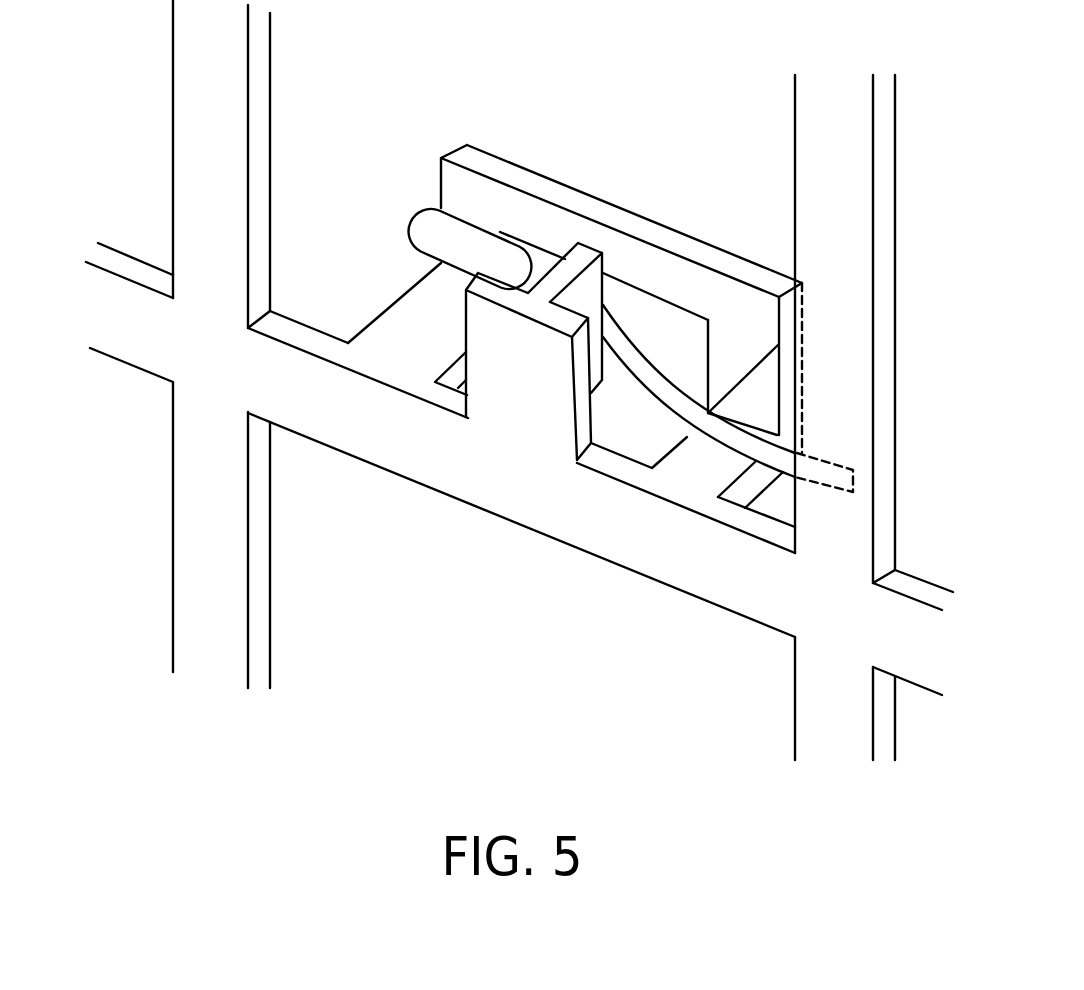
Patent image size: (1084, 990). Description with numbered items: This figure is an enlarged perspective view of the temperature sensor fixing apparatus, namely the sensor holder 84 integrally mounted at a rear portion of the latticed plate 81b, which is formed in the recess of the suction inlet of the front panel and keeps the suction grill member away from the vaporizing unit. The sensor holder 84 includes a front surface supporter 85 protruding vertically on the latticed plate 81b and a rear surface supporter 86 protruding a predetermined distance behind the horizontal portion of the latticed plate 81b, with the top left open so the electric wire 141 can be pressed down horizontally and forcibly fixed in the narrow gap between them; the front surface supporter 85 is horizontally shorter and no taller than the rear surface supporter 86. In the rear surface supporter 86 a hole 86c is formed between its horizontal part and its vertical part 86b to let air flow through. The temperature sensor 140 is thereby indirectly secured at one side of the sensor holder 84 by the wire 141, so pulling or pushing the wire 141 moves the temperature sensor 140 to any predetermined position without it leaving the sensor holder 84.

The latticed plate 81b is at (330, 430).
The sensor holder 84 is at (575, 408).
The front surface supporter 85 is at (513, 400).
The rear surface supporter 86 is at (518, 170).
The vertical part of rear supporter 86b is at (739, 295).
The hole 86c is at (663, 365).
The temperature sensor 140 is at (420, 220).
The electric wire 141 is at (748, 450).